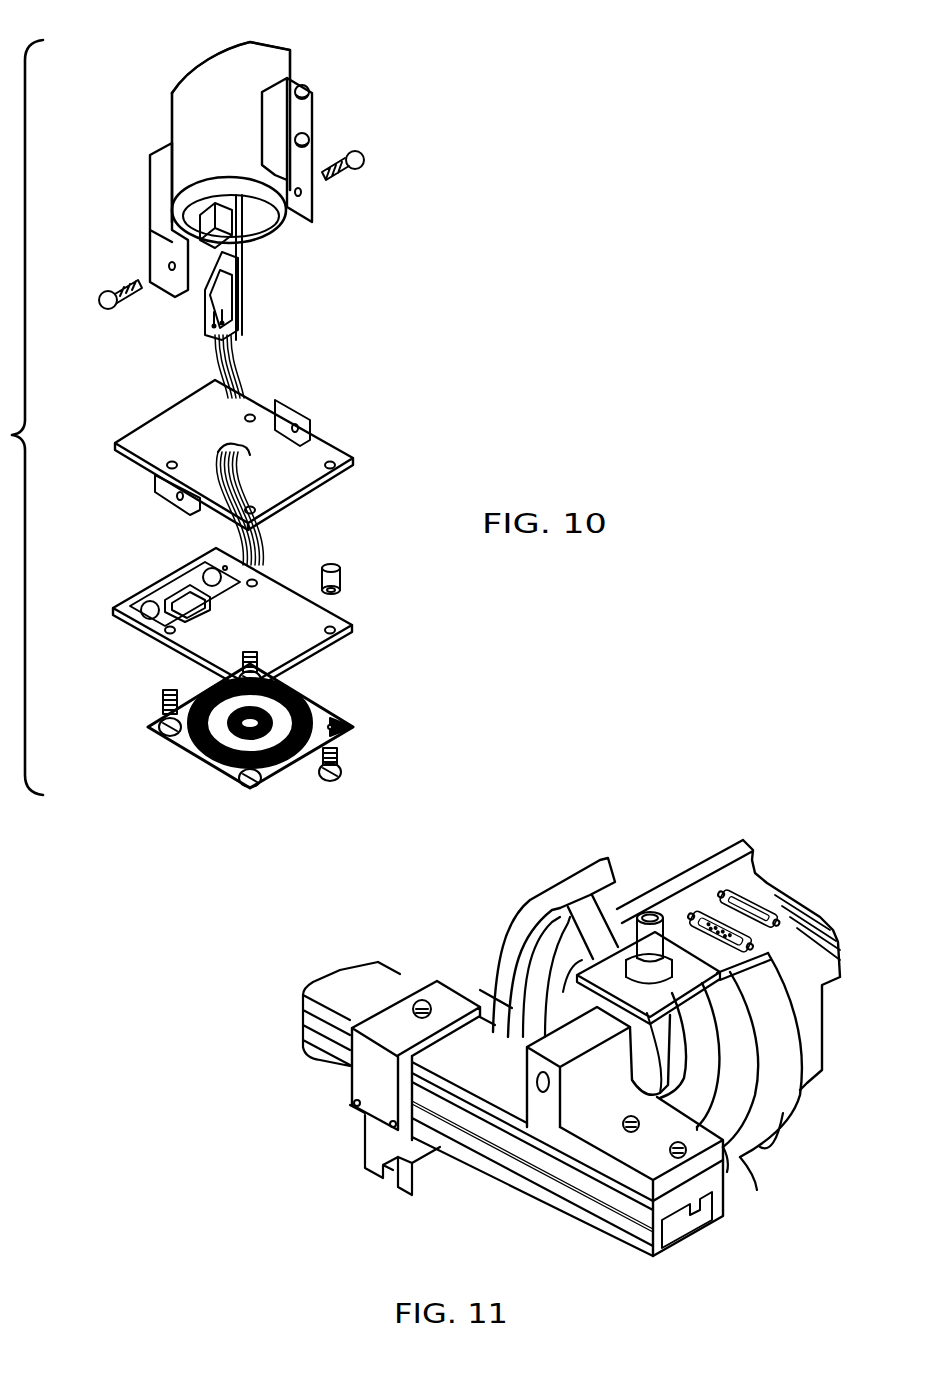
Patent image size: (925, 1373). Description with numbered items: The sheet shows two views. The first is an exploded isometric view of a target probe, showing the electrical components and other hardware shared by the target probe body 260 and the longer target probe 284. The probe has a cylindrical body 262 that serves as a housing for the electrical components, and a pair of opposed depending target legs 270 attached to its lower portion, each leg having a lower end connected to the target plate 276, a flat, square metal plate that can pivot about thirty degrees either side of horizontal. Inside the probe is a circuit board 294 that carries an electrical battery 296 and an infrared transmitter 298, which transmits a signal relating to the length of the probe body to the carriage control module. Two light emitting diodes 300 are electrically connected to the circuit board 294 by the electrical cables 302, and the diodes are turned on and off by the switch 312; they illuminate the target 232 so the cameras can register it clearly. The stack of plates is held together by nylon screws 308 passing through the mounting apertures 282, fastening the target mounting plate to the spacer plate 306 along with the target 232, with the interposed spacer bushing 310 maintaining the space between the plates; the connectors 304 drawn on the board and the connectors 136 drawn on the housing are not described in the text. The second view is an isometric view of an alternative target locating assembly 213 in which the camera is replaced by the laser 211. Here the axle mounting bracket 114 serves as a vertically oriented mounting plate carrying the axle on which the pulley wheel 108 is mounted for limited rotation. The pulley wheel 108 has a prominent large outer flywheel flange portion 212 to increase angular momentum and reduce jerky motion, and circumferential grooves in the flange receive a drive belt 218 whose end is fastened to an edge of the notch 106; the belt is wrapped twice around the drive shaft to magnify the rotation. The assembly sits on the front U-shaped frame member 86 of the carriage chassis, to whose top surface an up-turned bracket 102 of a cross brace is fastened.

In FIG. 10, the target probe body 260 is at (195, 95).
In FIG. 10, the longer target probe 284 is at (182, 128).
In FIG. 10, the cylindrical body 262 is at (290, 52).
In FIG. 10, the target legs 270 is at (312, 122).
In FIG. 10, the electrical battery 296 is at (207, 219).
In FIG. 10, the circuit board 294 is at (244, 262).
In FIG. 10, the infrared transmitter 298 is at (238, 298).
In FIG. 10, the electrical cables 302 is at (243, 492).
In FIG. 10, the spacer plate 306 is at (320, 437).
In FIG. 10, the mounting apertures 282 is at (172, 462).
In FIG. 10, the target plate 276 is at (322, 645).
In FIG. 10, the light emitting diodes 300 is at (200, 568).
In FIG. 10, the connector 304 is at (212, 577).
In FIG. 10, the switch 312 is at (170, 605).
In FIG. 10, the spacer bushing 310 is at (341, 580).
In FIG. 10, the target 232 is at (318, 716).
In FIG. 10, the nylon screws 308 is at (258, 663).
In FIG. 11, the target locating assembly 213 is at (723, 752).
In FIG. 11, the axle mounting bracket 114 is at (615, 1168).
In FIG. 11, the front U-shaped frame member 86 is at (673, 1240).
In FIG. 11, the up-turned bracket 102 is at (362, 1085).
In FIG. 11, the flywheel flange portion 212 is at (758, 1155).
In FIG. 11, the laser 211 is at (652, 913).
In FIG. 11, the notch 106 is at (510, 957).
In FIG. 11, the pulley wheel 108 is at (800, 1097).
In FIG. 11, the drive belt 218 is at (763, 1113).
In FIG. 11, the connector 136 is at (755, 887).